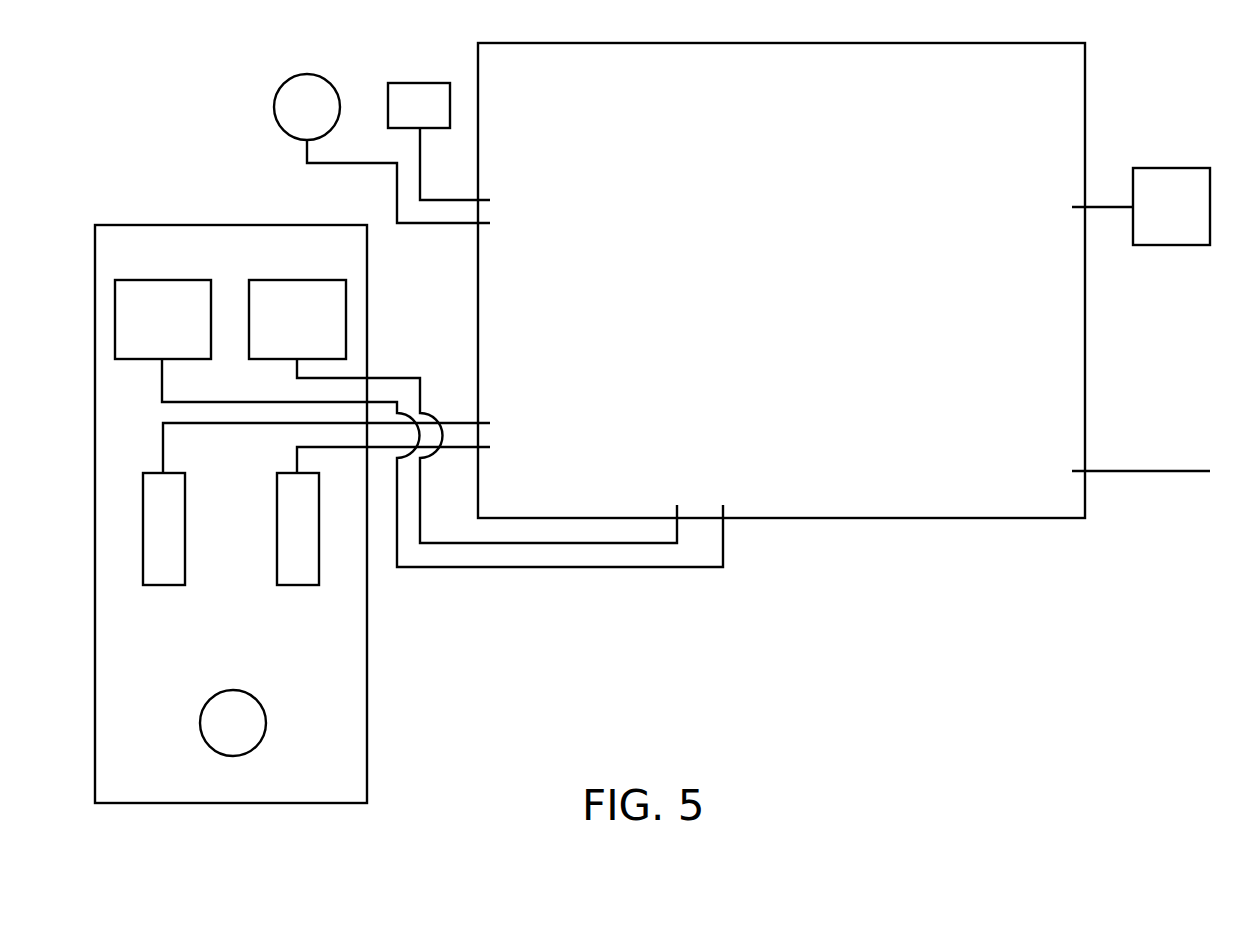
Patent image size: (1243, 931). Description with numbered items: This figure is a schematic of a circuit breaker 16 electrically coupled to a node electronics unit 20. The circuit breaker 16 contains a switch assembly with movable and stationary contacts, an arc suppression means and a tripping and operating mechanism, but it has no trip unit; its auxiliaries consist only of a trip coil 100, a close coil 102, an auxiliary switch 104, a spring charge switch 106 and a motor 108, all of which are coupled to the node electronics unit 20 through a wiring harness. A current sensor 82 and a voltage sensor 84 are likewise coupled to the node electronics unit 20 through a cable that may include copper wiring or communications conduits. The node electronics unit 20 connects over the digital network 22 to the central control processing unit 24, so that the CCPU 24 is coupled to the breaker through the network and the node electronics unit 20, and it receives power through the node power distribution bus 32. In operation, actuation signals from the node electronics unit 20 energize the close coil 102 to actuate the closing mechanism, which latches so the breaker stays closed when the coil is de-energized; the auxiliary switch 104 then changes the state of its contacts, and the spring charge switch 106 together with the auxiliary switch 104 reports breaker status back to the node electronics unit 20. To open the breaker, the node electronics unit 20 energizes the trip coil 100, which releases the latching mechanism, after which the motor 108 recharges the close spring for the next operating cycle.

The circuit breaker 16 is at (229, 224).
The node electronics unit 20 is at (1126, 78).
The digital network 22 is at (1101, 207).
The central control processing unit (CCPU) 24 is at (1155, 229).
The node power distribution bus 32 is at (1100, 472).
The current sensor 82 is at (290, 76).
The voltage sensor 84 is at (418, 83).
The trip coil 100 is at (160, 280).
The close coil 102 is at (296, 280).
The auxiliary switch 104 is at (186, 511).
The spring charge switch 106 is at (277, 563).
The motor 108 is at (263, 711).